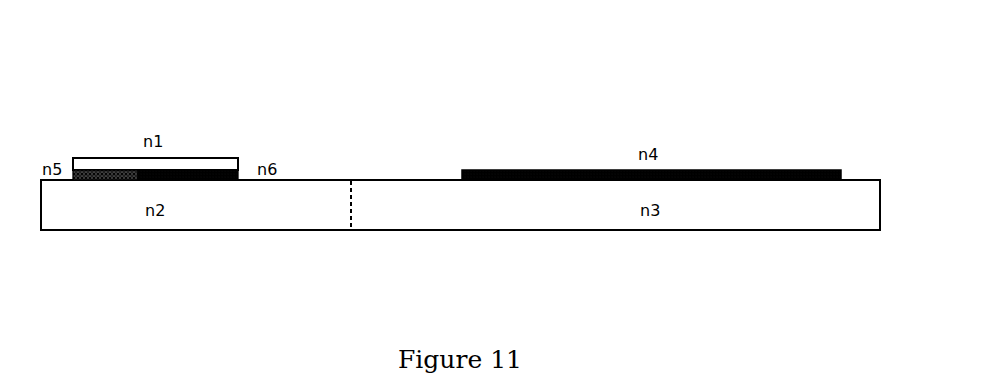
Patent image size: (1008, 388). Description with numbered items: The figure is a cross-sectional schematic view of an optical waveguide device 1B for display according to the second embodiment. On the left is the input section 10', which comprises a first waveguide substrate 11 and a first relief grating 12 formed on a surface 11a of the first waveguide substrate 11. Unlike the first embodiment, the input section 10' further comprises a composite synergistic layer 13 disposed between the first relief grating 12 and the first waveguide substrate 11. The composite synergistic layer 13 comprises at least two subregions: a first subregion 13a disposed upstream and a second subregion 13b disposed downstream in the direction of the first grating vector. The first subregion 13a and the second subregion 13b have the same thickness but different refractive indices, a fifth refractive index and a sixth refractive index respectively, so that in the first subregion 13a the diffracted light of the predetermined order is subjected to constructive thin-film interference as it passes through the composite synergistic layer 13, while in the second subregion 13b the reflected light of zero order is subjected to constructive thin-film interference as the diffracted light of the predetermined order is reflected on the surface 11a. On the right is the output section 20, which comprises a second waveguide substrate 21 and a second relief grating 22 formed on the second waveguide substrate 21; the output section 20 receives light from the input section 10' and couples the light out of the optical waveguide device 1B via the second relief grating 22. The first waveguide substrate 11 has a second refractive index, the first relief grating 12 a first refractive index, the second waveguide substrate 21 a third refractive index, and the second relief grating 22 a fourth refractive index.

The optical waveguide device for display 1B is at (338, 53).
The input section 10' is at (148, 118).
The first waveguide substrate 11 is at (293, 230).
The surface of the first waveguide substrate 11a is at (312, 180).
The first relief grating 12 is at (217, 158).
The composite synergistic layer 13 is at (63, 290).
The first subregion 13a is at (112, 180).
The second subregion 13b is at (193, 180).
The output section 20 is at (588, 113).
The second waveguide substrate 21 is at (755, 230).
The second relief grating 22 is at (803, 170).